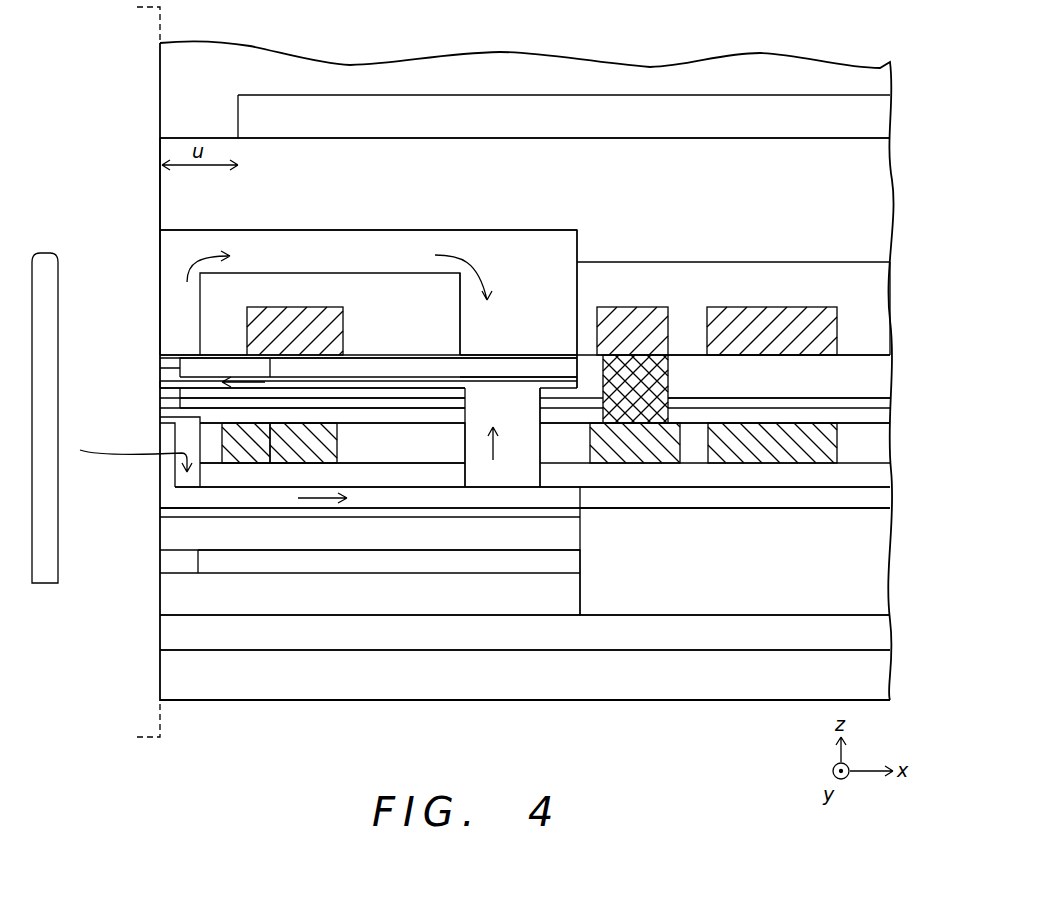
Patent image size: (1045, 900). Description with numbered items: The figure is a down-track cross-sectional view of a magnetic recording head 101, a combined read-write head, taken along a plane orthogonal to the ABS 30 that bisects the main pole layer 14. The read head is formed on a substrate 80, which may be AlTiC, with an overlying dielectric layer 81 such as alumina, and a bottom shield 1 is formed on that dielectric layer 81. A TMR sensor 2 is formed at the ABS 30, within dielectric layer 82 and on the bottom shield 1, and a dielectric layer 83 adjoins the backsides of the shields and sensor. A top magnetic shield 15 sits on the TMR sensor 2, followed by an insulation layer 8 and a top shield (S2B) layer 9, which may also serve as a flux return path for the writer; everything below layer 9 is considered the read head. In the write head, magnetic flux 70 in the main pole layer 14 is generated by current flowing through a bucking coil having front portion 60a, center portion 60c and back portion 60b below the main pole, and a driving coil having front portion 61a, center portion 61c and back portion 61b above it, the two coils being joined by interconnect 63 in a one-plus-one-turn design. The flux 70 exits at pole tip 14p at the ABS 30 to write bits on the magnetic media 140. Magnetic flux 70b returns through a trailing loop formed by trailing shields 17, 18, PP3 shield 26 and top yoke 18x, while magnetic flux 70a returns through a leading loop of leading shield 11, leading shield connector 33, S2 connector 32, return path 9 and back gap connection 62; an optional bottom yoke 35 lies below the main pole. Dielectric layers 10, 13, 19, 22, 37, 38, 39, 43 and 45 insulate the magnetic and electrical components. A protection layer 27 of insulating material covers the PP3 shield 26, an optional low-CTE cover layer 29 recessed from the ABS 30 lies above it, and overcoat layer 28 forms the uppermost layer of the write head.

The magnetic recording head 101 is at (78, 98).
The ABS 30 is at (135, 374).
The magnetic media 140 is at (42, 583).
The overcoat layer 28 is at (170, 97).
The cover layer 29 is at (877, 116).
The protection layer 27 is at (170, 204).
The PP3 shield 26 is at (170, 252).
The dielectric layer 45 is at (217, 305).
The dielectric layer 22 is at (200, 352).
The driving coil front portion 61a is at (277, 315).
The driving coil back portion 61b is at (833, 322).
The driving coil center portion 61c is at (638, 320).
The interconnect 63 is at (662, 368).
The dielectric layer 43 is at (877, 374).
The trailing shield 18 is at (165, 358).
The top yoke 18x is at (512, 370).
The trailing shield 17 is at (163, 374).
The main pole layer 14 is at (535, 387).
The pole tip 14p is at (119, 369).
The dielectric layer 13 is at (160, 393).
The leading shield 11 is at (165, 403).
The bottom yoke 35 is at (397, 395).
The dielectric layer 39 is at (445, 403).
The dielectric layer 38 is at (407, 415).
The leading shield connector 33 is at (170, 413).
The S2 connector 32 is at (182, 432).
The dielectric layer 37 is at (361, 445).
The bucking coil front portion 60a is at (243, 450).
The bucking coil back portion 60b is at (753, 457).
The bucking coil center portion 60c is at (630, 455).
The back gap connection 62 is at (513, 473).
The dielectric layer 10 is at (163, 470).
The dielectric layer 19 is at (170, 497).
The top shield (S2B) layer 9 is at (187, 502).
The insulation layer 8 is at (170, 513).
The dielectric layer 83 is at (873, 530).
The top magnetic shield 15 is at (175, 545).
The TMR sensor 2 is at (180, 560).
The dielectric layer 82 is at (542, 562).
The bottom shield 1 is at (172, 600).
The dielectric layer 81 is at (172, 630).
The substrate 80 is at (172, 673).
The magnetic flux 70 is at (62, 383).
The magnetic flux 70a is at (88, 427).
The magnetic flux 70b is at (88, 356).